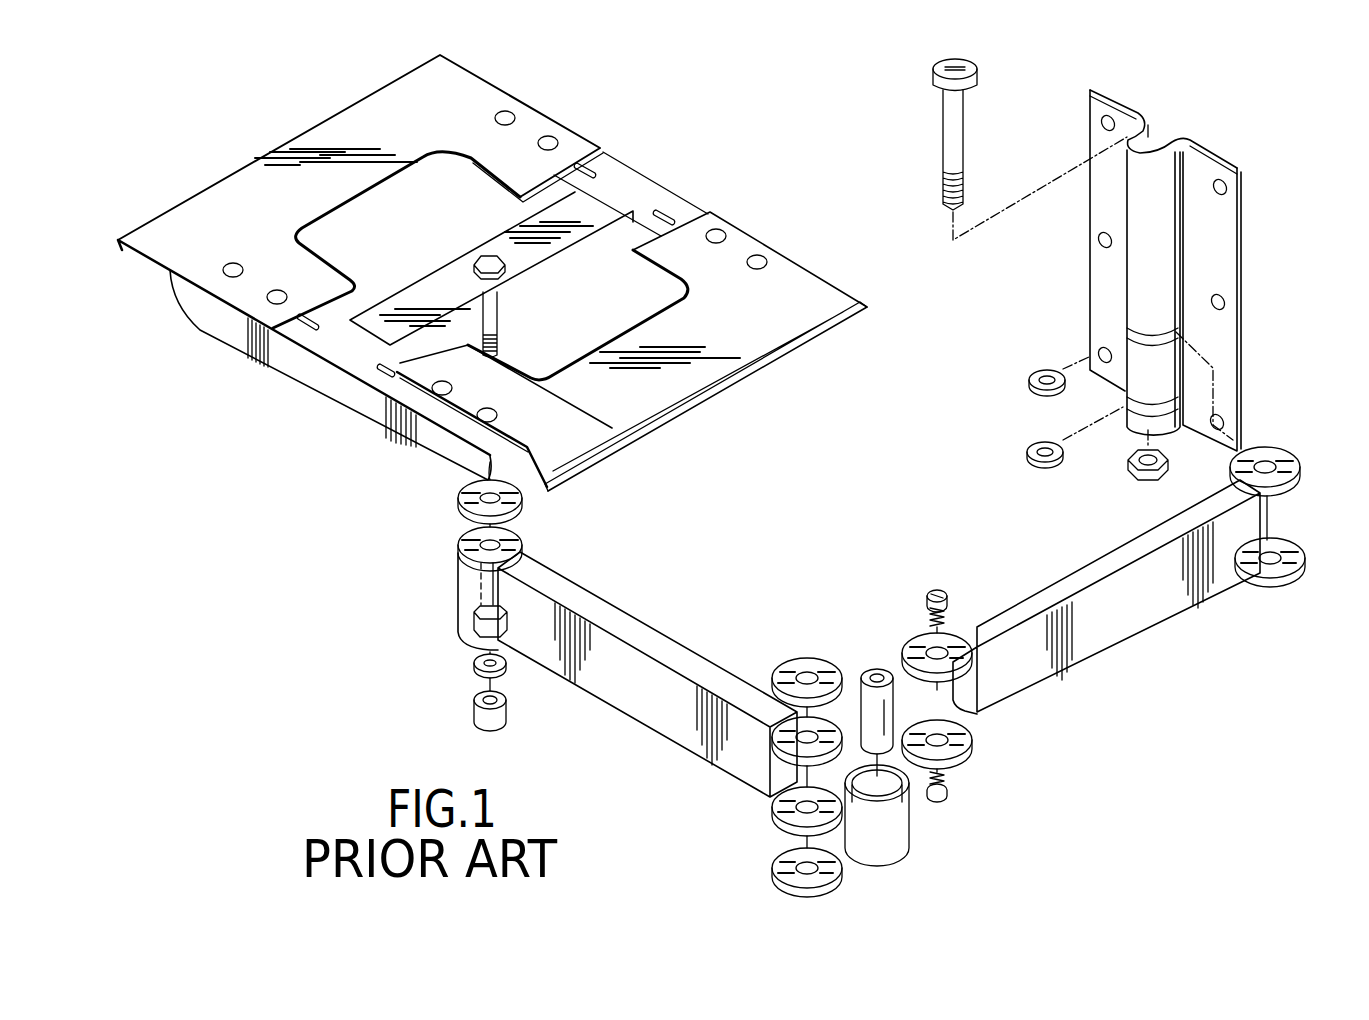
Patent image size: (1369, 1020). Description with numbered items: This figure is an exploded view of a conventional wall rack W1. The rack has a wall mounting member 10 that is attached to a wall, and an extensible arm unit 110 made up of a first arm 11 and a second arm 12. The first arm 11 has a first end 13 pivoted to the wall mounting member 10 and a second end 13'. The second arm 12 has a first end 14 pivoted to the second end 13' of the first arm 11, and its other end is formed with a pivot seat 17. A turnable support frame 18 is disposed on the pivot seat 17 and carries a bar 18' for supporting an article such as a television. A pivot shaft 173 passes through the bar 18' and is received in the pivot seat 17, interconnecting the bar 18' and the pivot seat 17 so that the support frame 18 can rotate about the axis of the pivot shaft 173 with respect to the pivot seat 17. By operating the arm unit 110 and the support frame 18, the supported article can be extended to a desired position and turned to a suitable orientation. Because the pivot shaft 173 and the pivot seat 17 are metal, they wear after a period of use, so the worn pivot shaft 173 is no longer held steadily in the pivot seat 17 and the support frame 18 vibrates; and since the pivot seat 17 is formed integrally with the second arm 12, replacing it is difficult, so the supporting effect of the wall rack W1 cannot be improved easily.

The wall mounting member 10 is at (1230, 158).
The first arm 11 is at (1010, 605).
The second arm 12 is at (597, 593).
The first end 13 is at (1283, 517).
The second end 13' is at (915, 696).
The first end 14 is at (780, 813).
The pivot seat 17 is at (458, 558).
The turnable support frame 18 is at (492, 273).
The bar 18' is at (491, 268).
The extensible arm unit 110 is at (912, 538).
The pivot shaft 173 is at (499, 322).
The conventional wall rack W1 is at (858, 112).